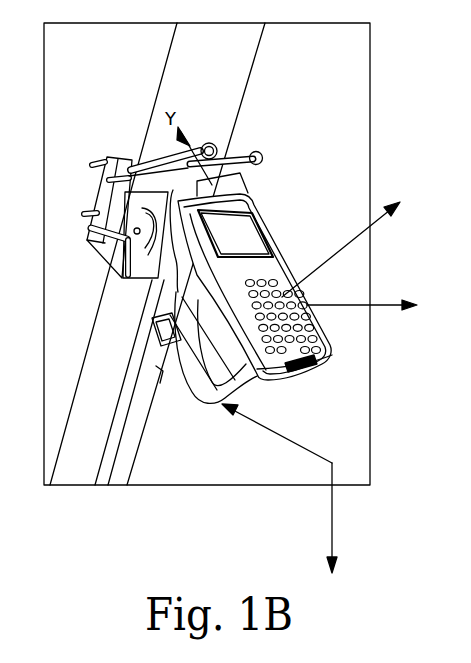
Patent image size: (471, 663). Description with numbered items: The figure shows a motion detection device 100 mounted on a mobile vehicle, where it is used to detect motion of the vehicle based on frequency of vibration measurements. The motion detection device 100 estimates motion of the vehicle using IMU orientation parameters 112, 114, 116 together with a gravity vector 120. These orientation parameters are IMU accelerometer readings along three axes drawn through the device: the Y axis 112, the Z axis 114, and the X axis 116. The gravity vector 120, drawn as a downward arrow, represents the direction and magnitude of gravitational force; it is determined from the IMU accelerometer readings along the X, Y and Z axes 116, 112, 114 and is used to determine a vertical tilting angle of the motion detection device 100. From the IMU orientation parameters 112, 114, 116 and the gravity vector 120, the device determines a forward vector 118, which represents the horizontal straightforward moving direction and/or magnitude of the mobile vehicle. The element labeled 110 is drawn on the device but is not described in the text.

The motion detection device 100 is at (297, 294).
The display screen 110 is at (246, 221).
The IMU orientation parameter along Y axis 112 is at (248, 192).
The IMU orientation parameter along Z axis 114 is at (387, 220).
The IMU orientation parameter along X axis 116 is at (380, 308).
The forward vector 118 is at (310, 448).
The gravity vector 120 is at (333, 503).